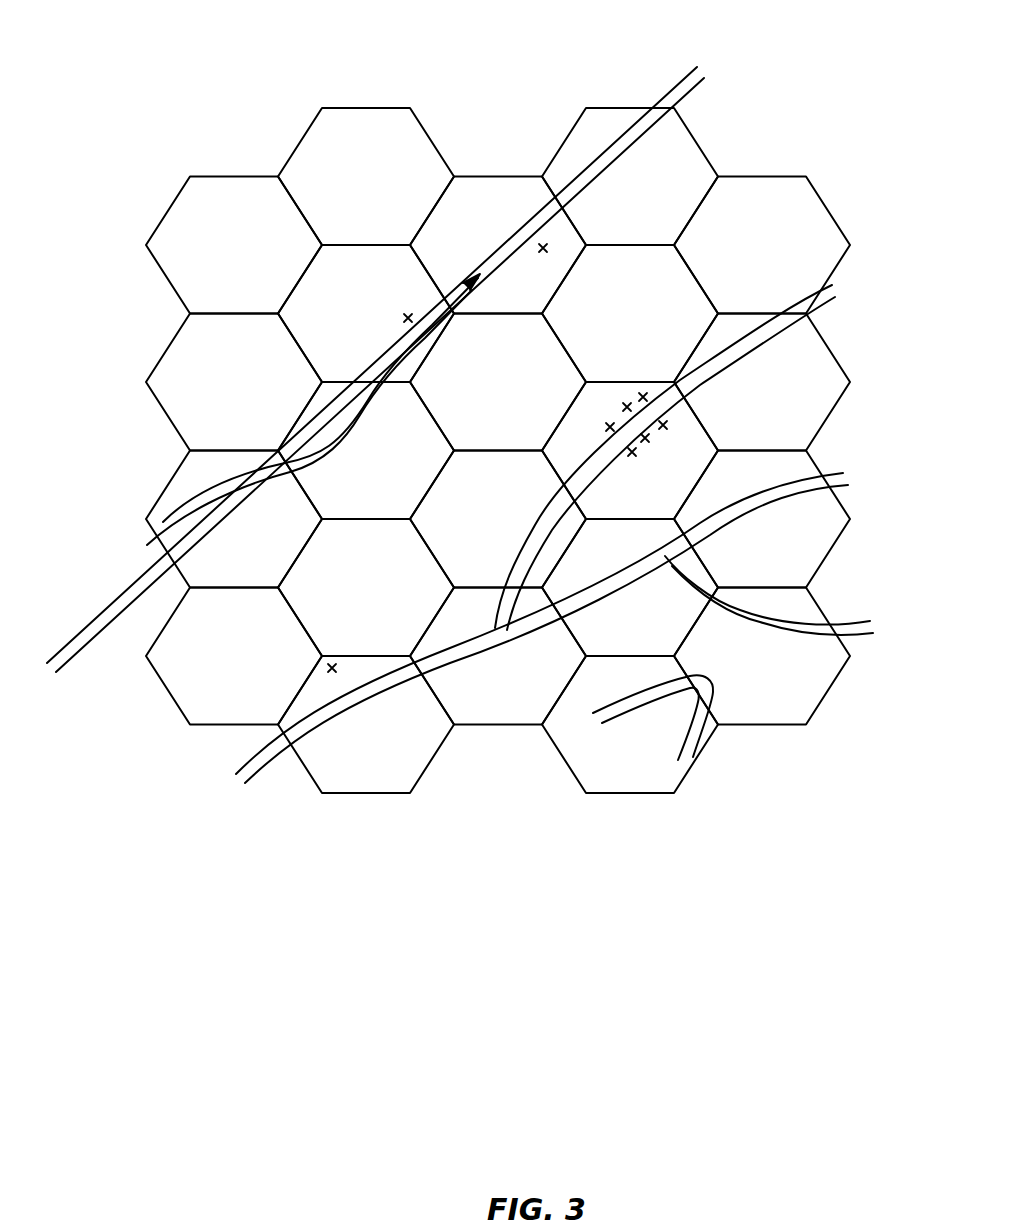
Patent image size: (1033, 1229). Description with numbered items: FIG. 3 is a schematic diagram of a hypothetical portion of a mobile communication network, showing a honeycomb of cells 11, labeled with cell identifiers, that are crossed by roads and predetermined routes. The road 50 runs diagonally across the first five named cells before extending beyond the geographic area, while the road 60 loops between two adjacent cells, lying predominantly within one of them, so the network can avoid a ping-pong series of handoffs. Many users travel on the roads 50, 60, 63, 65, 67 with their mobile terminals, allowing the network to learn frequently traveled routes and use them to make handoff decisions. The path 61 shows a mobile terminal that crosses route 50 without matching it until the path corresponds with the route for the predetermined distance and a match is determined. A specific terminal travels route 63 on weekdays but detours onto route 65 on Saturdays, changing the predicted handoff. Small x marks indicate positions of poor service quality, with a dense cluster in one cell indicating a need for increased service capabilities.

The cells 11 is at (423, 130).
The road 50 is at (668, 92).
The path 61 is at (147, 517).
The route 63 is at (242, 783).
The route 65 is at (840, 621).
The road 67 is at (793, 293).
The road 60 is at (703, 727).